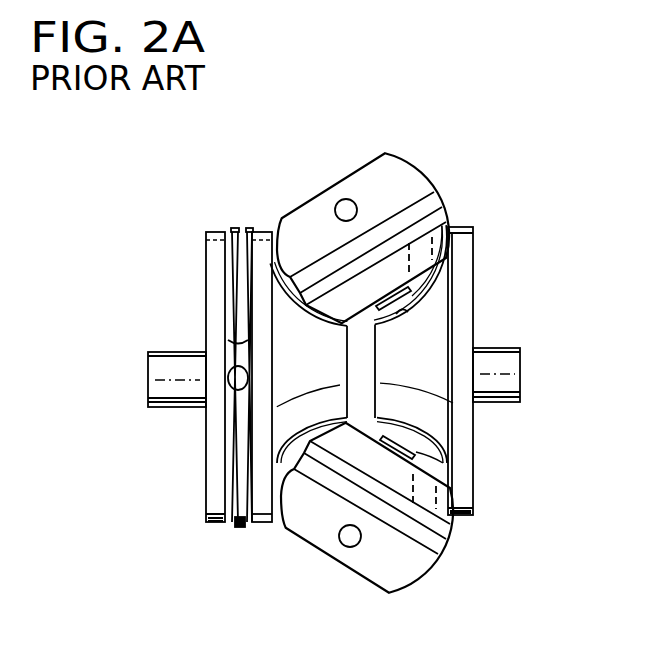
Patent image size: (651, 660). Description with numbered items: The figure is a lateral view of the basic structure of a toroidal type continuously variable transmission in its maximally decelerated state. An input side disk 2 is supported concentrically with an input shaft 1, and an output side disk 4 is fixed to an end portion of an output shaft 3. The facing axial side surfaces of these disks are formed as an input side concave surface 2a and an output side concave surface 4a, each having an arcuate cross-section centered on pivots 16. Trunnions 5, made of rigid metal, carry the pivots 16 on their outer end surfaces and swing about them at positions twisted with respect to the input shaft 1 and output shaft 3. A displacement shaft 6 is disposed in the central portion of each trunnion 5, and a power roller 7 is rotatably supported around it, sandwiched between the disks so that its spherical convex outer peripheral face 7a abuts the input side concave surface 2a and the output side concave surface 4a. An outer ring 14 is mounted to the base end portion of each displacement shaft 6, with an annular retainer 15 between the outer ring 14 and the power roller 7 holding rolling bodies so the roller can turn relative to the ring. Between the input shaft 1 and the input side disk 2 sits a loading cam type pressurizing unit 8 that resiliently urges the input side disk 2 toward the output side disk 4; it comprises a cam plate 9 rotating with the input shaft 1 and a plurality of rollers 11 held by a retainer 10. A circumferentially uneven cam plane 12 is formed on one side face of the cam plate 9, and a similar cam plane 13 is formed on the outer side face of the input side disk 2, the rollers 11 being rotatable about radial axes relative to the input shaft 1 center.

The input shaft 1 is at (158, 373).
The input side disk 2 is at (260, 232).
The input side concave surface 2a is at (293, 440).
The output shaft 3 is at (508, 368).
The output side disk 4 is at (470, 238).
The output side concave surface 4a is at (407, 313).
The trunnion 5 is at (394, 170).
The displacement shaft 6 is at (411, 293).
The power roller 7 is at (422, 265).
The outer peripheral face 7a is at (447, 213).
The loading cam type pressurizing unit 8 is at (222, 229).
The cam plate 9 is at (218, 503).
The retainer 10 is at (240, 527).
The rollers 11 is at (247, 230).
The cam plane 12 is at (230, 347).
The cam plane 13 is at (248, 320).
The outer ring 14 is at (434, 193).
The annular retainer 15 is at (445, 208).
The pivot 16 is at (346, 198).